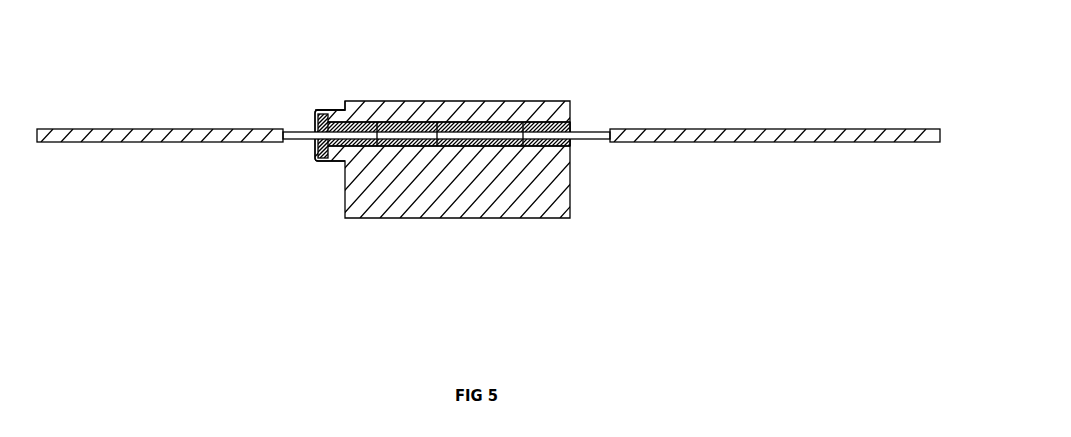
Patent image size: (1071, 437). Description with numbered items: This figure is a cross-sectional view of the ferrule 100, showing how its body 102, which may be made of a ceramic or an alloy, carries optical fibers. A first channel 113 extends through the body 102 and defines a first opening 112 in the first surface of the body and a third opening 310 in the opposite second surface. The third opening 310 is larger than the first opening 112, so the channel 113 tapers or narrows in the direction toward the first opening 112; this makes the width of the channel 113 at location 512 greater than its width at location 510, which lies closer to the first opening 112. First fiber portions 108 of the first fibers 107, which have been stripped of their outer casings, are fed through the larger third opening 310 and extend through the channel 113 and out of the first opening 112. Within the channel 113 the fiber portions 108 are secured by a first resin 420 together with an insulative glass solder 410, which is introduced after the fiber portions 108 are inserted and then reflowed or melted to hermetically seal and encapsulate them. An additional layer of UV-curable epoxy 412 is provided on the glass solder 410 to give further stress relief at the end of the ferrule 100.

The ferrule 100 is at (590, 260).
The body 102 is at (452, 111).
The first fibers 107 is at (488, 177).
The first fiber portions 108 is at (406, 174).
The first opening 112 is at (331, 71).
The first channel 113 is at (427, 198).
The third opening 310 is at (629, 104).
The glass solder 410 is at (301, 184).
The UV-curable epoxy 412 is at (292, 116).
The first resin 420 is at (461, 91).
The location 510 is at (351, 194).
The location 512 is at (515, 203).